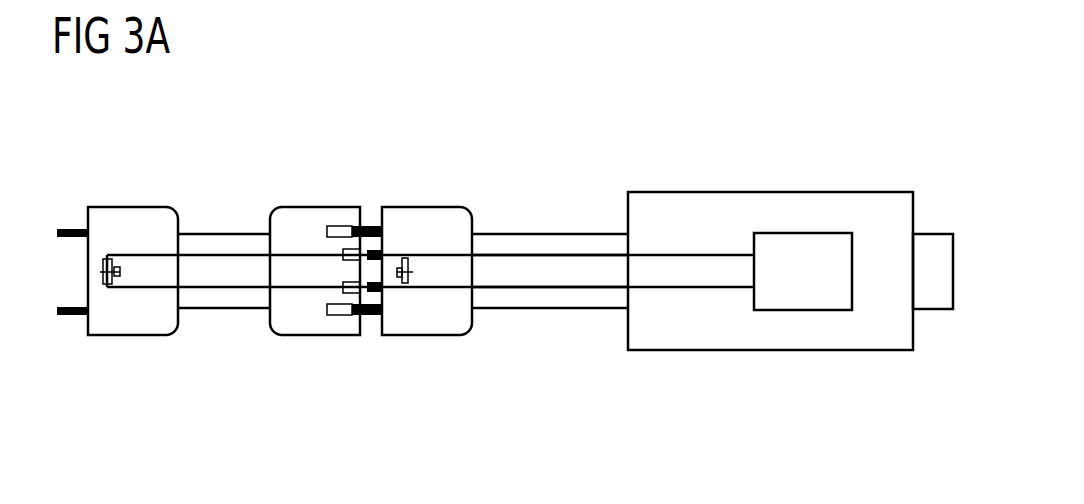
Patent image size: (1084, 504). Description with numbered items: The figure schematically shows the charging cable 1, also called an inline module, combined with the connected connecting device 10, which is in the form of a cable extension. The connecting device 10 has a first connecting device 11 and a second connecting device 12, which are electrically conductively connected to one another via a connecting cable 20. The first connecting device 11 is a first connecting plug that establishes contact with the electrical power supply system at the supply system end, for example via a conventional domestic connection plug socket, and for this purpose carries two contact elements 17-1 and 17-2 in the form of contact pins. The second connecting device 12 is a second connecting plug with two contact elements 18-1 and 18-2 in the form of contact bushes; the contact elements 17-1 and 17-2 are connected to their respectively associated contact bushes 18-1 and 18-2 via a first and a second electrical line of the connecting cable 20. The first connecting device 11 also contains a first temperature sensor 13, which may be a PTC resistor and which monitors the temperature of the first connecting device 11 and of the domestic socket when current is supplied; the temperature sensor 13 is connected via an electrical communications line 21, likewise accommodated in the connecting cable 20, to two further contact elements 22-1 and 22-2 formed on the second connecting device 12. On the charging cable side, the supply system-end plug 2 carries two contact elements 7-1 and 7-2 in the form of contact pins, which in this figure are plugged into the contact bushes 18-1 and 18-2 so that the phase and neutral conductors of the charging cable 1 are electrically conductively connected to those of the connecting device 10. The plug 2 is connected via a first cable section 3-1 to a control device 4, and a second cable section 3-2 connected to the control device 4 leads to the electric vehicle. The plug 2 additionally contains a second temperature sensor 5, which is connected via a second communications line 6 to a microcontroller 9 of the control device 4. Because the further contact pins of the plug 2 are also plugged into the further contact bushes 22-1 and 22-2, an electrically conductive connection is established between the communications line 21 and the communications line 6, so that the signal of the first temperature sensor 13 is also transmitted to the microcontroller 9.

The charging cable 1 is at (543, 418).
The connecting device 10 is at (223, 418).
The first connecting device 11 is at (125, 206).
The second connecting device 12 is at (278, 208).
The first temperature sensor 13 is at (112, 277).
The contact element 17-1 is at (68, 317).
The contact element 17-2 is at (67, 226).
The contact element 18-1 is at (332, 317).
The contact element 18-2 is at (332, 226).
The supply system-end plug 2 is at (430, 207).
The connecting cable 20 is at (232, 233).
The communications line 21 is at (197, 254).
The contact element 22-1 is at (355, 318).
The contact element 22-2 is at (356, 225).
The first cable section 3-1 is at (517, 233).
The second cable section 3-2 is at (940, 234).
The control device 4 is at (688, 192).
The second temperature sensor 5 is at (409, 273).
The second communications line 6 is at (567, 254).
The contact element 7-1 is at (370, 318).
The contact element 7-2 is at (370, 226).
The microcontroller 9 is at (803, 233).